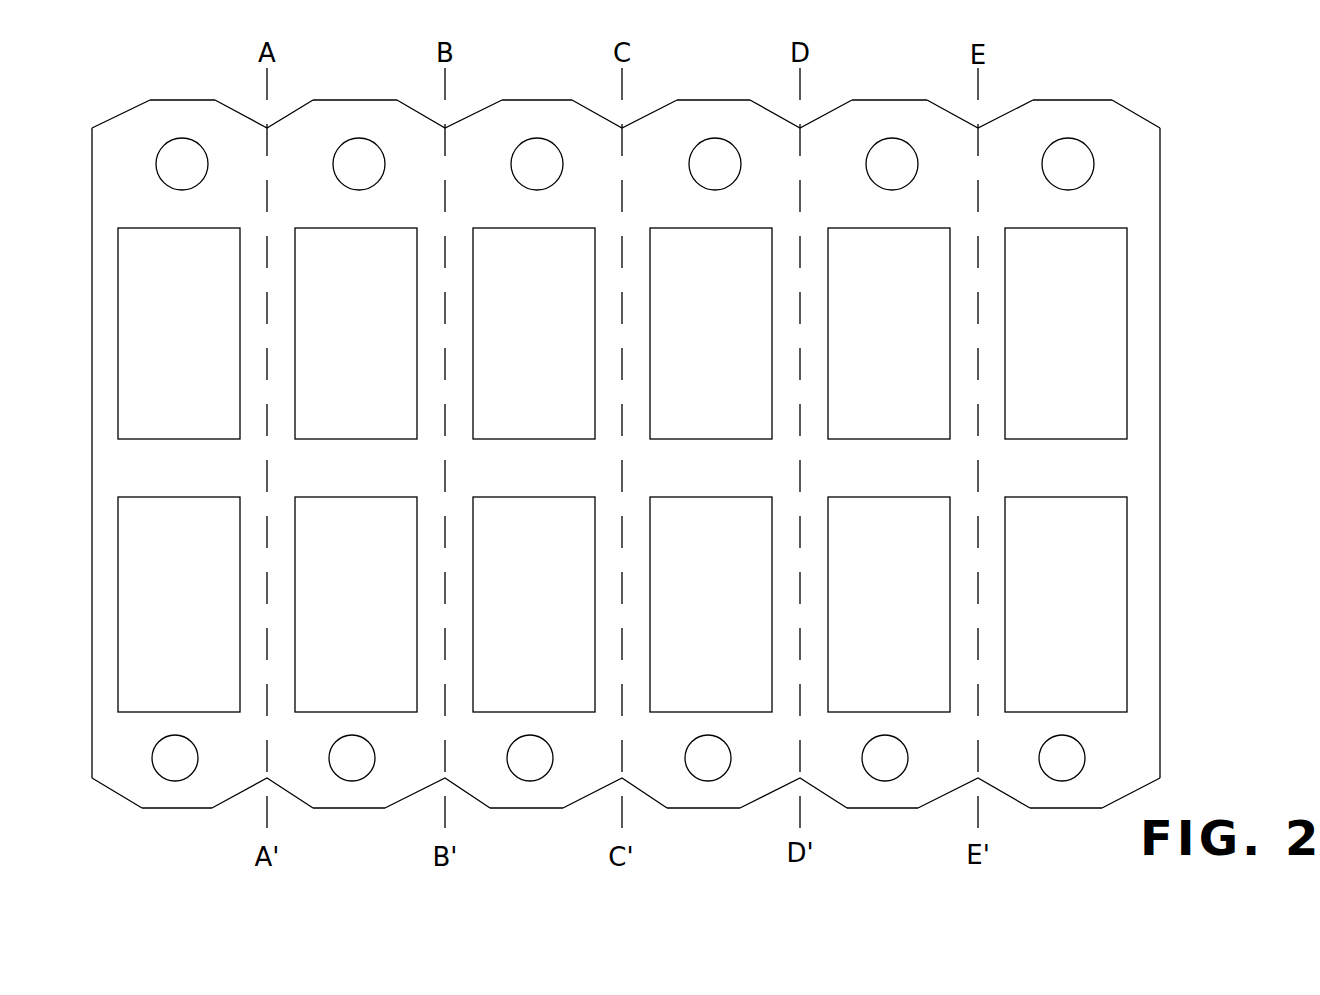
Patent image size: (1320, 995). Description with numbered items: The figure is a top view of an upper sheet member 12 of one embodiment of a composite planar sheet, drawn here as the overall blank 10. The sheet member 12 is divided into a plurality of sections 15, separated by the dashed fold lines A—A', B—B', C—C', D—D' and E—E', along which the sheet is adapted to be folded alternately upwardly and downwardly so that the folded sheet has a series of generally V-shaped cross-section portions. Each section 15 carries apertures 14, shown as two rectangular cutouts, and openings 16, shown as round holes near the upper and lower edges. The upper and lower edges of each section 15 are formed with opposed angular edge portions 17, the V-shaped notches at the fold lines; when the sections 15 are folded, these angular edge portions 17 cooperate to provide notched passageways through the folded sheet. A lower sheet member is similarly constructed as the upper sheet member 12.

The strip blank 10 is at (1080, 68).
The upper sheet member 12 is at (525, 123).
The aperture 14 is at (1100, 323).
The section 15 is at (820, 66).
The opening 16 is at (172, 160).
The opposed angular edge portion 17 is at (298, 101).